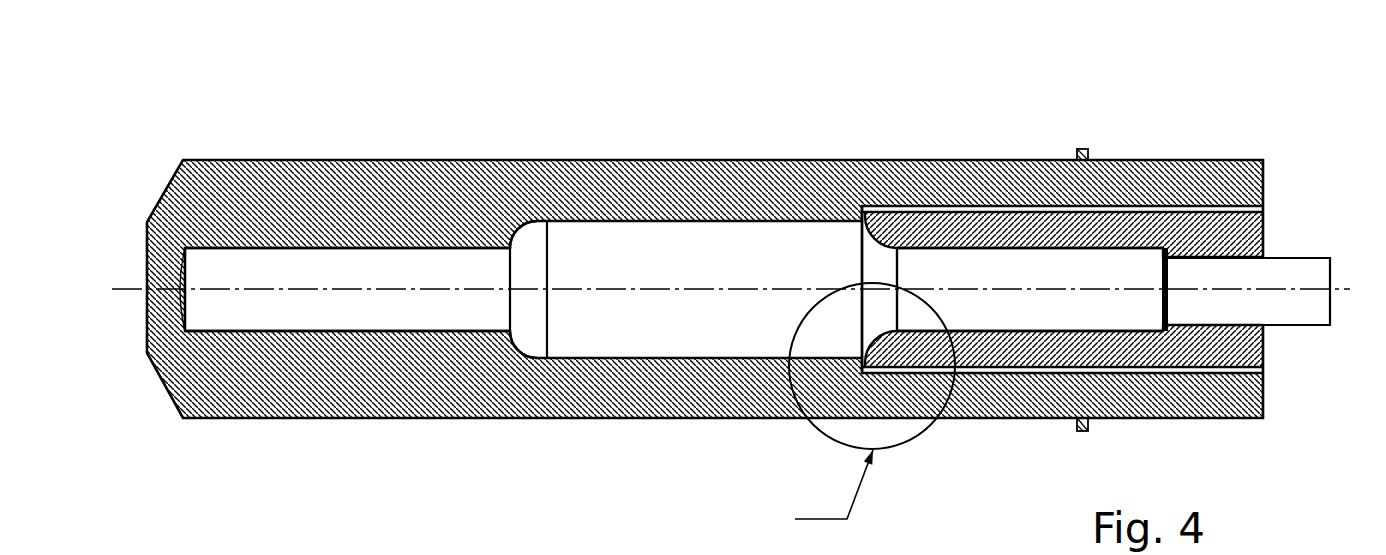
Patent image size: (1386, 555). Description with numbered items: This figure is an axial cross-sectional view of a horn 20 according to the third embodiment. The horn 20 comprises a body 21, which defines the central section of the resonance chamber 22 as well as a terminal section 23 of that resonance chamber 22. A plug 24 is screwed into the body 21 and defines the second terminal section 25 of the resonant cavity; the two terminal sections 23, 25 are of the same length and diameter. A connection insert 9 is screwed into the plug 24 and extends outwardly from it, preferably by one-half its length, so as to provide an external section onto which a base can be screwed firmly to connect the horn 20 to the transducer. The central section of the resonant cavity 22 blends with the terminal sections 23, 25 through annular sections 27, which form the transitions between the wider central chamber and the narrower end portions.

The rod 9 is at (1258, 290).
The holder 20 is at (732, 270).
The housing 21 is at (606, 185).
The chamber 22 is at (703, 262).
The bore 23 is at (420, 275).
The insert 24 is at (1112, 230).
The insert bore 25 is at (1023, 272).
The rounded transition 27 is at (527, 252).